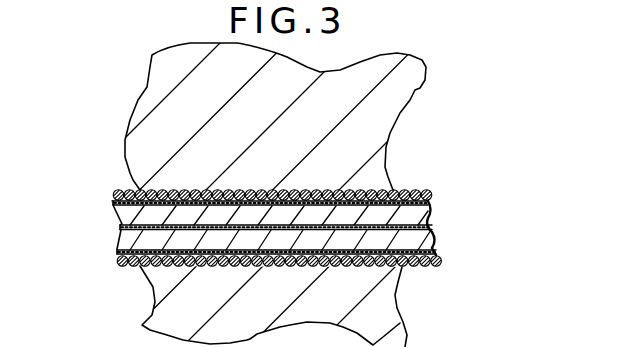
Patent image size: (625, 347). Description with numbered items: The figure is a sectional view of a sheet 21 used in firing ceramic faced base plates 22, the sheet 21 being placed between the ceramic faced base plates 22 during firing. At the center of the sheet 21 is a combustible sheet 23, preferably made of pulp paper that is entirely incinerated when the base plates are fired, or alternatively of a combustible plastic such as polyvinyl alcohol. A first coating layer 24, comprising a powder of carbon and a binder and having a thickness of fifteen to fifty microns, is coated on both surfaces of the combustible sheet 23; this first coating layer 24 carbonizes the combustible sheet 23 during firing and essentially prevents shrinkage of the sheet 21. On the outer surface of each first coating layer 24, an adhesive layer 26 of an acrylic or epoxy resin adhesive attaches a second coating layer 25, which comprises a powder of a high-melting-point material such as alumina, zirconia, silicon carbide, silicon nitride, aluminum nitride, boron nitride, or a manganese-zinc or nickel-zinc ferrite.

The sheet 21 is at (113, 218).
The ceramic faced base plates 22 is at (417, 90).
The combustible sheet 23 is at (433, 230).
The first coating layer 24 is at (430, 212).
The second coating layer 25 is at (427, 197).
The adhesive layer 26 is at (428, 202).